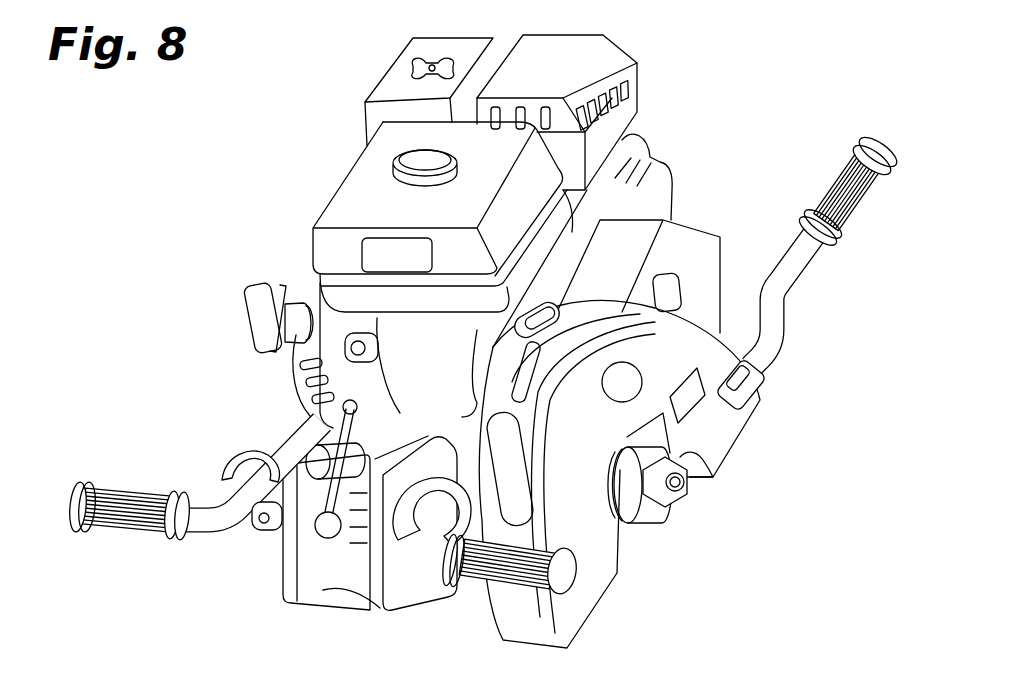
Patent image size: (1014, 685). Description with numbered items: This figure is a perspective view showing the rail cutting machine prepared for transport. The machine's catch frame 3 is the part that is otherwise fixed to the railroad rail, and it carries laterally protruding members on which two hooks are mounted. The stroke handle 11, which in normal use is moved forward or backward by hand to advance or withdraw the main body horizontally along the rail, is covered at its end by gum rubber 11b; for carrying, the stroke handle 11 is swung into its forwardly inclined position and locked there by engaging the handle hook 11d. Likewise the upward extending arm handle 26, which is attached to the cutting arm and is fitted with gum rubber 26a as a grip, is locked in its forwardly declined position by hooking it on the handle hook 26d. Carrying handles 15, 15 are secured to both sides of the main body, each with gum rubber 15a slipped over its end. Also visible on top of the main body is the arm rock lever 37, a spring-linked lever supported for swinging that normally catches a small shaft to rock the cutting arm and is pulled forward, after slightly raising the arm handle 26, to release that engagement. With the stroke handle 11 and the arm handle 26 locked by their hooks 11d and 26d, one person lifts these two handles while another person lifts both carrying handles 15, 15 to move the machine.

The catch frame 3 is at (330, 590).
The stroke handle 11 is at (213, 524).
The gum rubber 11b is at (130, 506).
The handle hook 11d is at (237, 467).
The carrying handle 15 is at (778, 308).
The gum rubber 15a is at (866, 210).
The arm handle 26 is at (428, 592).
The gum rubber 26a is at (565, 572).
The handle hook 26d is at (440, 446).
The arm rock lever 37 is at (560, 308).